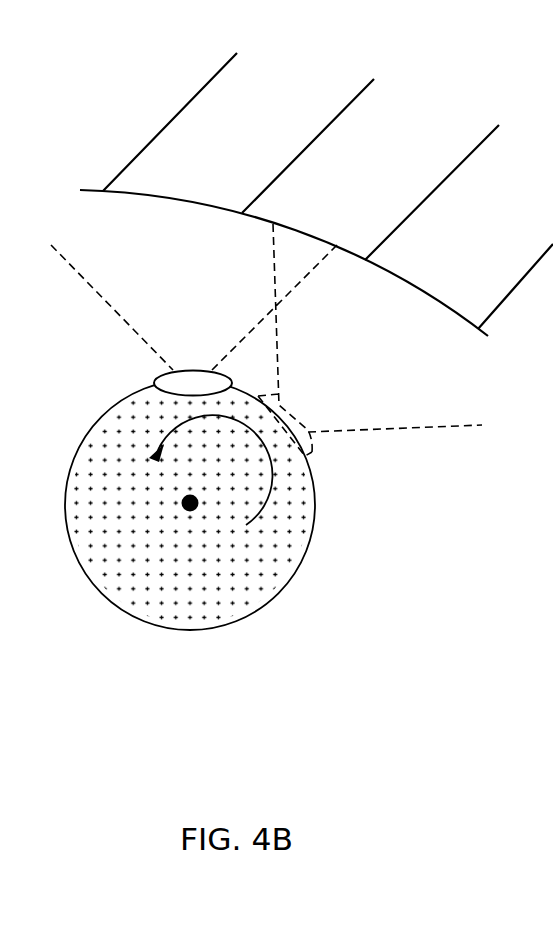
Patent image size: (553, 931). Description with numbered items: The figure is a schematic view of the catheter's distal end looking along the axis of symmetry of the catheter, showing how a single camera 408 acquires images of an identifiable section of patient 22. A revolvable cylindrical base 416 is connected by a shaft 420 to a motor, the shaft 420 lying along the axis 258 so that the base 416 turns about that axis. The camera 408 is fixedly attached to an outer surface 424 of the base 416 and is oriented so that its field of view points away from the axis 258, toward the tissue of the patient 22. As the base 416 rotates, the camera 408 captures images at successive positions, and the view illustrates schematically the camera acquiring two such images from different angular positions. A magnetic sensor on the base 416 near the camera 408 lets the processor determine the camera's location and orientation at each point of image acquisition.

The patient 22 is at (393, 275).
The camera 408 is at (170, 373).
The revolvable cylindrical base 416 is at (278, 593).
The outer surface 424 is at (188, 632).
The axis 258 is at (246, 558).
The shaft 420 is at (190, 503).